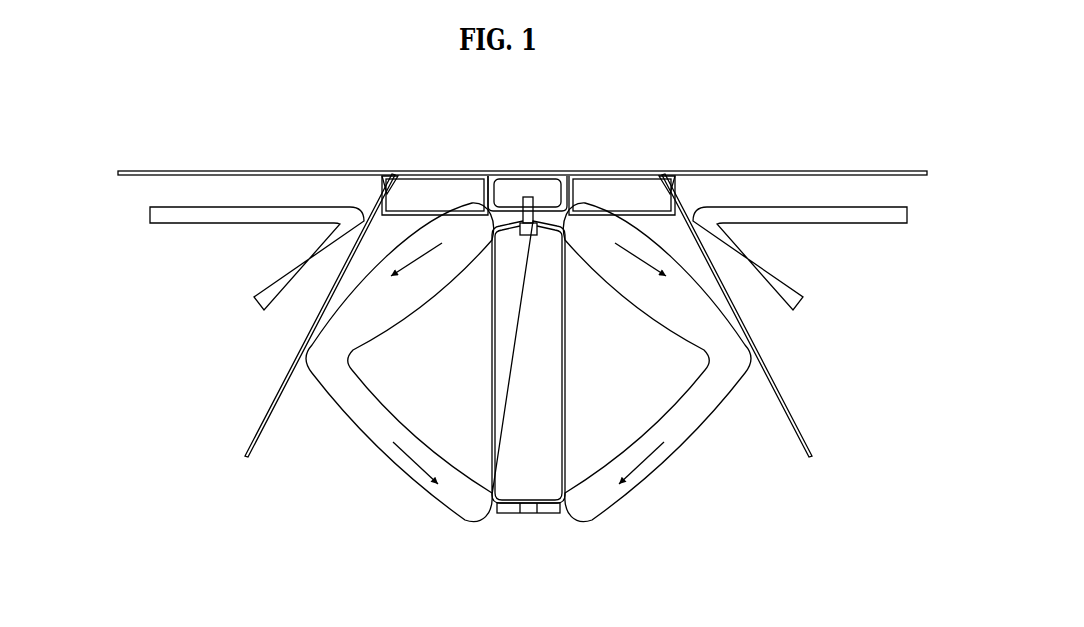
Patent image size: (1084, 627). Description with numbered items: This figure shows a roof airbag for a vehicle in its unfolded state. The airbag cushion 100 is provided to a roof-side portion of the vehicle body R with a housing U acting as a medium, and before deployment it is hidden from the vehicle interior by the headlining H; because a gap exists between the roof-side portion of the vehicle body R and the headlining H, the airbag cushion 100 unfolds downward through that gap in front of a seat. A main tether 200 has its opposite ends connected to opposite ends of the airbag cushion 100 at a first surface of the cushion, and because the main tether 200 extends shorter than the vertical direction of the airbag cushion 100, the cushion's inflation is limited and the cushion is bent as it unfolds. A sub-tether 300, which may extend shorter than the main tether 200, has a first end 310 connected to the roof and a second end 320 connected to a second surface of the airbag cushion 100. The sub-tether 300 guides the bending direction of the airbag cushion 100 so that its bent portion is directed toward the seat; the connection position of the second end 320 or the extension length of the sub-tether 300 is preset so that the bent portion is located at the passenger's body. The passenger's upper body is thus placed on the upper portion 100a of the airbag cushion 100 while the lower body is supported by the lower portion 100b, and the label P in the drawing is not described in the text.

The vehicle body R is at (238, 170).
The headlining H is at (202, 224).
The housing U is at (413, 187).
The first end 310 is at (357, 190).
The second end 320 is at (293, 363).
The sub-tether 300 is at (256, 416).
The main tether 200 is at (554, 480).
The airbag cushion 100 is at (351, 440).
The upper portion 100a is at (605, 235).
The lower portion 100b is at (633, 478).
The passenger side P is at (733, 357).